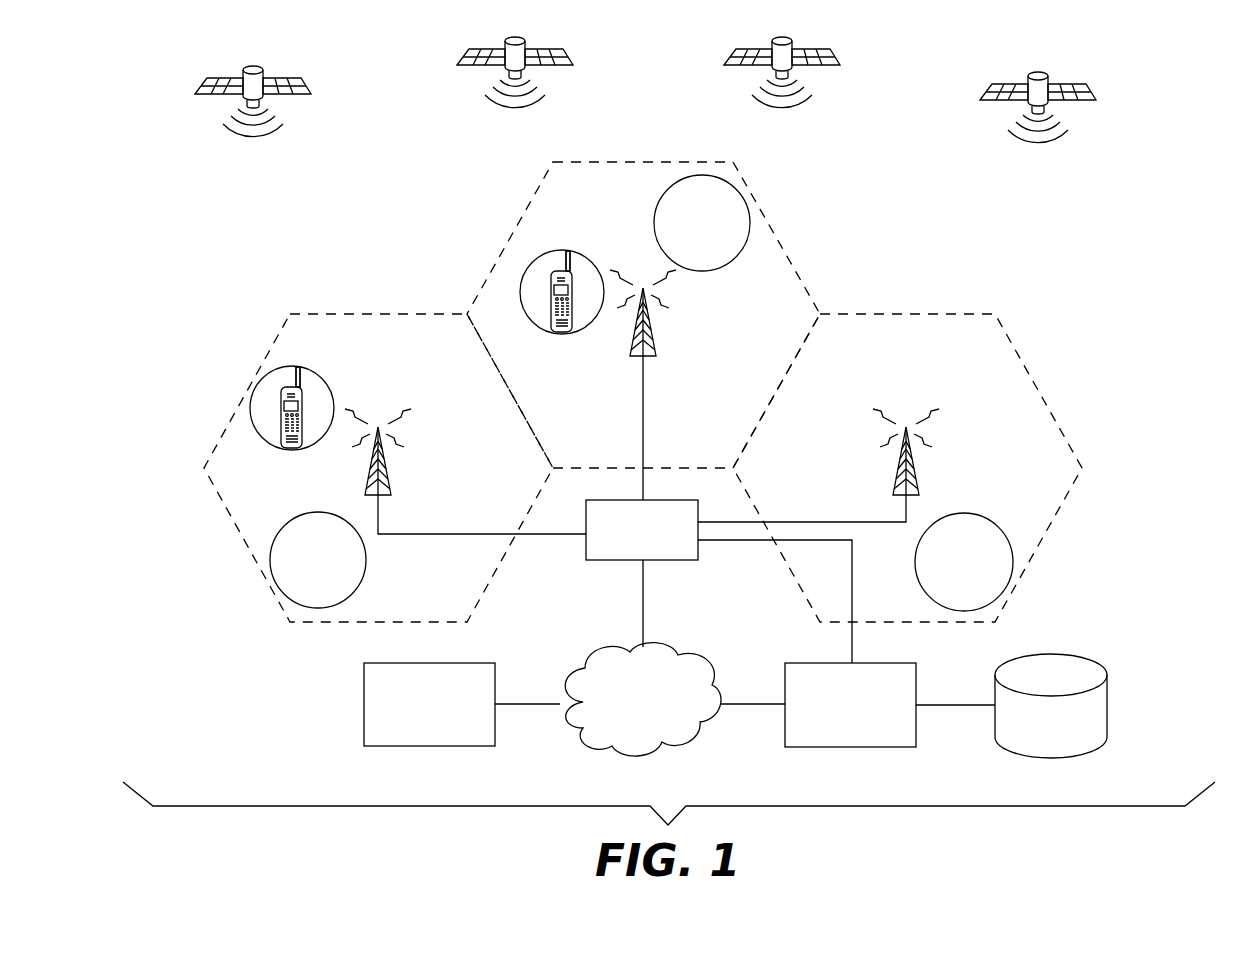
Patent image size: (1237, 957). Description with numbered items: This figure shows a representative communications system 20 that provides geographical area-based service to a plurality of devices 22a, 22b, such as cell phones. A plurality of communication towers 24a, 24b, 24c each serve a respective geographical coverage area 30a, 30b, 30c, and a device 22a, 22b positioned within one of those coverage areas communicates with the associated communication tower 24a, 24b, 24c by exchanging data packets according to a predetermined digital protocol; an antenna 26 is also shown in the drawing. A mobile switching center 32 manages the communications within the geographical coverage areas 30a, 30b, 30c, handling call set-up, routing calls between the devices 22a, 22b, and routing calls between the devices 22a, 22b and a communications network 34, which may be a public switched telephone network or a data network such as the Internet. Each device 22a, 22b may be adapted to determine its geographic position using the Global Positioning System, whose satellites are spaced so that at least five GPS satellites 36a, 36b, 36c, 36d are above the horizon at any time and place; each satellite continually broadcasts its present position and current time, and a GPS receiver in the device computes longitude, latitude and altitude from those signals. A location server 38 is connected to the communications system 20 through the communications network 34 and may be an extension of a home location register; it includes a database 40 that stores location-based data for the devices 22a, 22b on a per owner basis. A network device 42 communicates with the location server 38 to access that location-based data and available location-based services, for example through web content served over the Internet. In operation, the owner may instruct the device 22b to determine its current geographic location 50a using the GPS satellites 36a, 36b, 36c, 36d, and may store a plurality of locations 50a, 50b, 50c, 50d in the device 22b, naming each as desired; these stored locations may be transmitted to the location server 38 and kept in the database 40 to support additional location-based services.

The communications system 20 is at (353, 236).
The device 22a is at (291, 449).
The device 22b is at (560, 333).
The communication tower 24a is at (392, 491).
The communication tower 24b is at (657, 337).
The communication tower 24c is at (930, 485).
The antenna 26 is at (302, 383).
The geographical coverage area 30a is at (203, 468).
The geographical coverage area 30b is at (653, 162).
The geographical coverage area 30c is at (1083, 468).
The mobile switching center 32 is at (665, 500).
The communications network 34 is at (690, 652).
The GPS satellite 36a is at (308, 81).
The GPS satellite 36b is at (568, 51).
The GPS satellite 36c is at (835, 51).
The GPS satellite 36d is at (1094, 84).
The location server 38 is at (893, 673).
The database 40 is at (1077, 665).
The network device 42 is at (363, 706).
The current geographic location 50a is at (251, 411).
The location 50b is at (751, 224).
The location 50c is at (270, 564).
The location 50d is at (1013, 563).